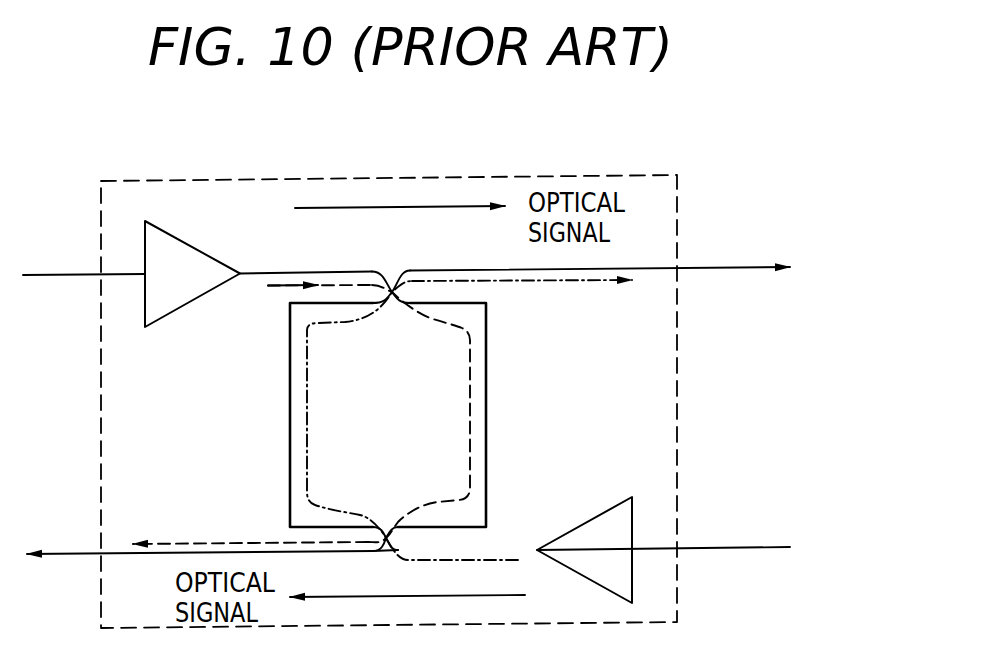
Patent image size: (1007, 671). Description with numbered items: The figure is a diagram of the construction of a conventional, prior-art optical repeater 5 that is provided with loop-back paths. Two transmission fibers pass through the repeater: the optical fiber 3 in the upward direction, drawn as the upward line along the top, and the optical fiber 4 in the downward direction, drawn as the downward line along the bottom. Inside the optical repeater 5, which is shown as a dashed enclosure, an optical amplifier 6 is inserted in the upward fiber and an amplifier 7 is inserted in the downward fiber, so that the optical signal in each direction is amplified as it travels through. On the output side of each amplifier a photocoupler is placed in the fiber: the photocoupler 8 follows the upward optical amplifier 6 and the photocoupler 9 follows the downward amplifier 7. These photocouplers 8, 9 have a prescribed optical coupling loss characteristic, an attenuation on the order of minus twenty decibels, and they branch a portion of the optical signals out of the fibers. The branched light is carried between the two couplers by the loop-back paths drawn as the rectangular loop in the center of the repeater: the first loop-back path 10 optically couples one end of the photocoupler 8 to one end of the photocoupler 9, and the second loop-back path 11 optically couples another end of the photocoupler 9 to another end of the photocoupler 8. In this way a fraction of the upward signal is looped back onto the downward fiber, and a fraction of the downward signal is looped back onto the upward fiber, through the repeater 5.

The optical fiber in the upward direction 3 is at (53, 276).
The optical fiber in the downward direction 4 is at (63, 555).
The optical repeater 5 is at (216, 181).
The optical amplifier in the upward direction 6 is at (213, 265).
The amplifier in the downward direction 7 is at (604, 510).
The photocoupler 8 is at (392, 266).
The photocoupler 9 is at (403, 540).
The first loop-back path 10 is at (488, 403).
The second loop-back path 11 is at (293, 423).